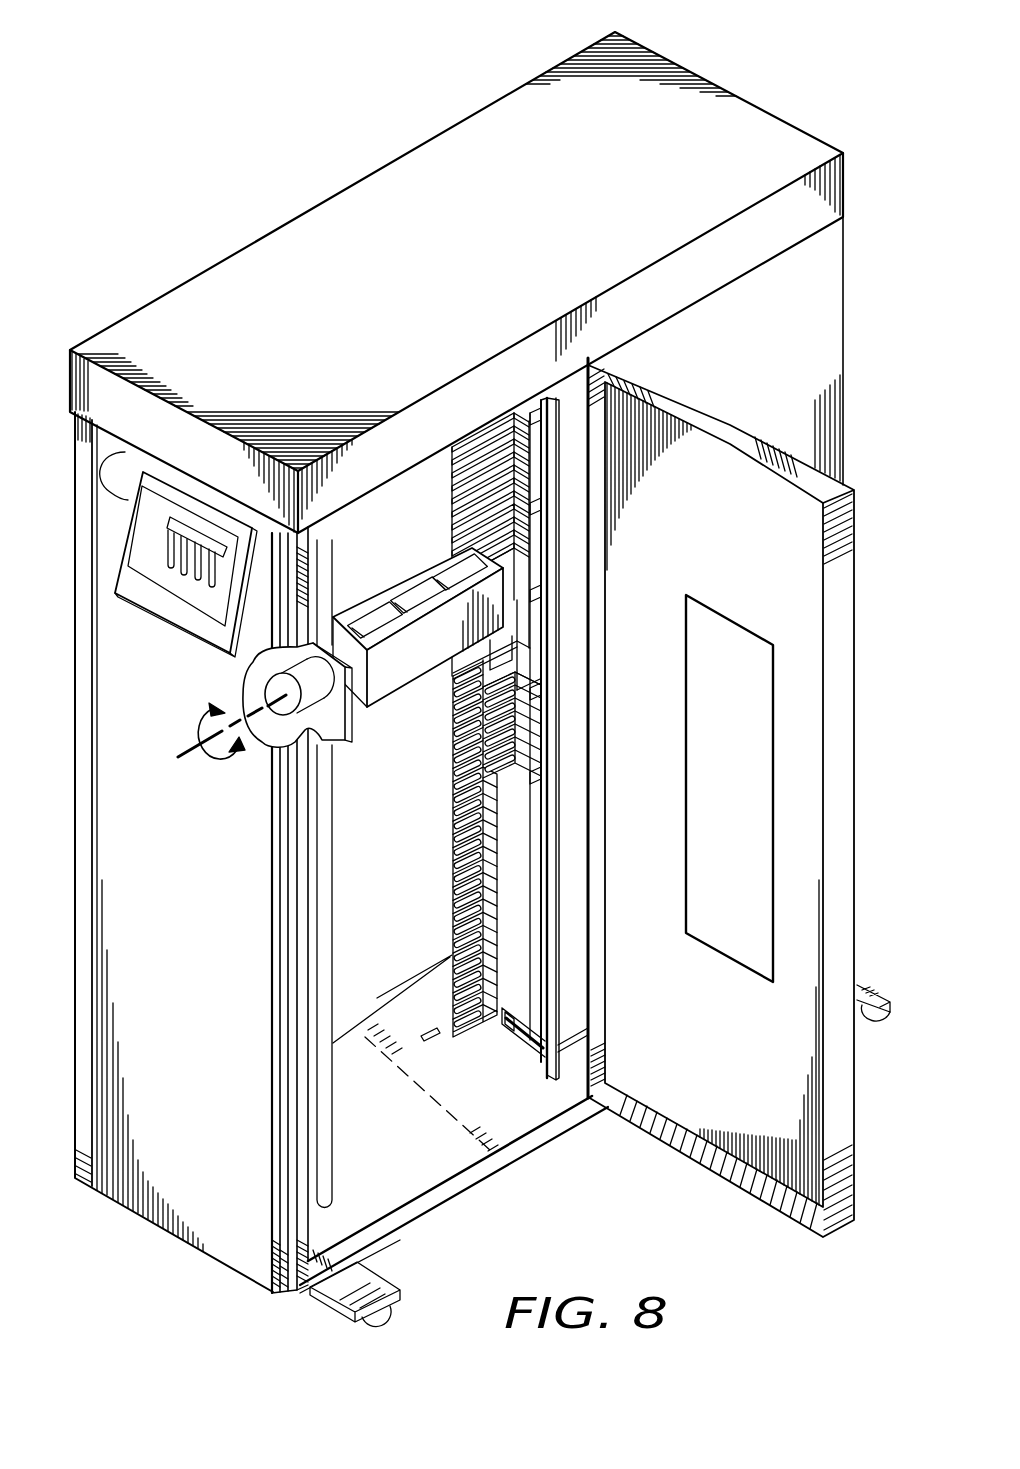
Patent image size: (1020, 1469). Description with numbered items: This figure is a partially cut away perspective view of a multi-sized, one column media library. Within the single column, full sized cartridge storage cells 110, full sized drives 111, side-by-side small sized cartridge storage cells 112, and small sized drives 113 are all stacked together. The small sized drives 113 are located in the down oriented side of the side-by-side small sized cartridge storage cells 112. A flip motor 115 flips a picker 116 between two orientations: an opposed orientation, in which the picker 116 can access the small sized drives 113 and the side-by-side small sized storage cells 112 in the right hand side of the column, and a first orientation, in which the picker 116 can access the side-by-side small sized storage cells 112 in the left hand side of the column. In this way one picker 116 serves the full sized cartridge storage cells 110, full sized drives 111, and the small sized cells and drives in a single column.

The full sized cartridge storage cells 110 is at (505, 440).
The full sized drives 111 is at (530, 626).
The side-by-side small sized cartridge storage cells 112 is at (455, 730).
The small sized drives 113 is at (530, 1003).
The flip motor 115 is at (247, 682).
The picker 116 is at (402, 582).